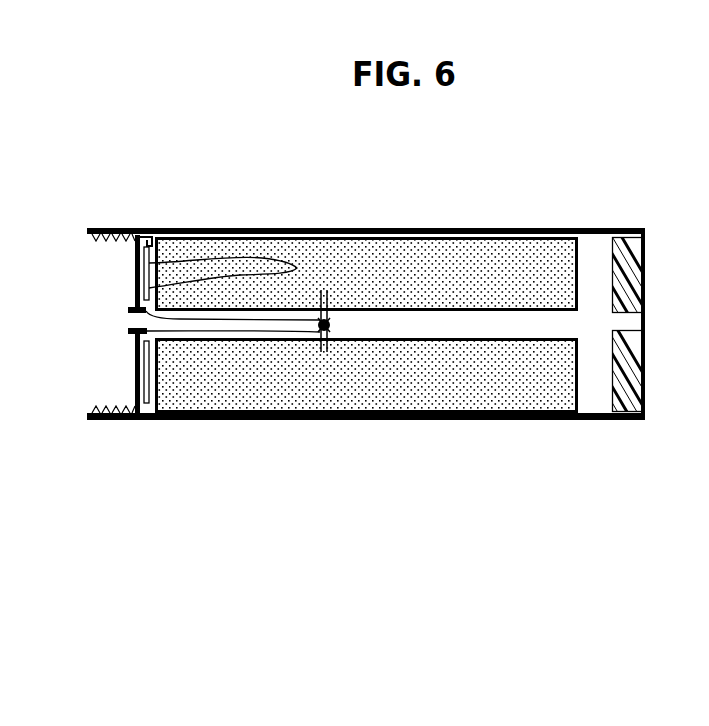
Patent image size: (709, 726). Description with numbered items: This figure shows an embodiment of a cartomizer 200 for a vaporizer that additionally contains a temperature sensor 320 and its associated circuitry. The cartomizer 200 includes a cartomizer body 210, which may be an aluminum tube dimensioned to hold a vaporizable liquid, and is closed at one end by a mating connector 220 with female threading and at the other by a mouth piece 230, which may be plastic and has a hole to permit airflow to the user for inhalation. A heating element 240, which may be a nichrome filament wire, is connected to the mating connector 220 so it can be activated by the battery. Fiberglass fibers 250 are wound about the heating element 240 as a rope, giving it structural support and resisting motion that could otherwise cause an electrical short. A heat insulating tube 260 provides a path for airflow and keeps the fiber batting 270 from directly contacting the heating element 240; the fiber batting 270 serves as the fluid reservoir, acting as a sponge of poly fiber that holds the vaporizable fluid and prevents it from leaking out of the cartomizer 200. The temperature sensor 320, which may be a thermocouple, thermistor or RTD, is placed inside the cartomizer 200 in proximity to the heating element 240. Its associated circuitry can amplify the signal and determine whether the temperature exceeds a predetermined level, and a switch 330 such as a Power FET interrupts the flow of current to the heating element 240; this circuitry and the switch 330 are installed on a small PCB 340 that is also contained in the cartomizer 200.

The cartomizer 200 is at (228, 196).
The cartomizer body 210 is at (290, 229).
The mating connector 220 is at (110, 228).
The mouth piece 230 is at (645, 273).
The heating element 240 is at (285, 343).
The fiberglass fibers 250 is at (327, 355).
The heat insulating tube 260 is at (522, 345).
The fiber batting 270 is at (370, 383).
The temperature sensor 320 is at (297, 268).
The switch 330 is at (135, 255).
The PCB 340 is at (135, 359).